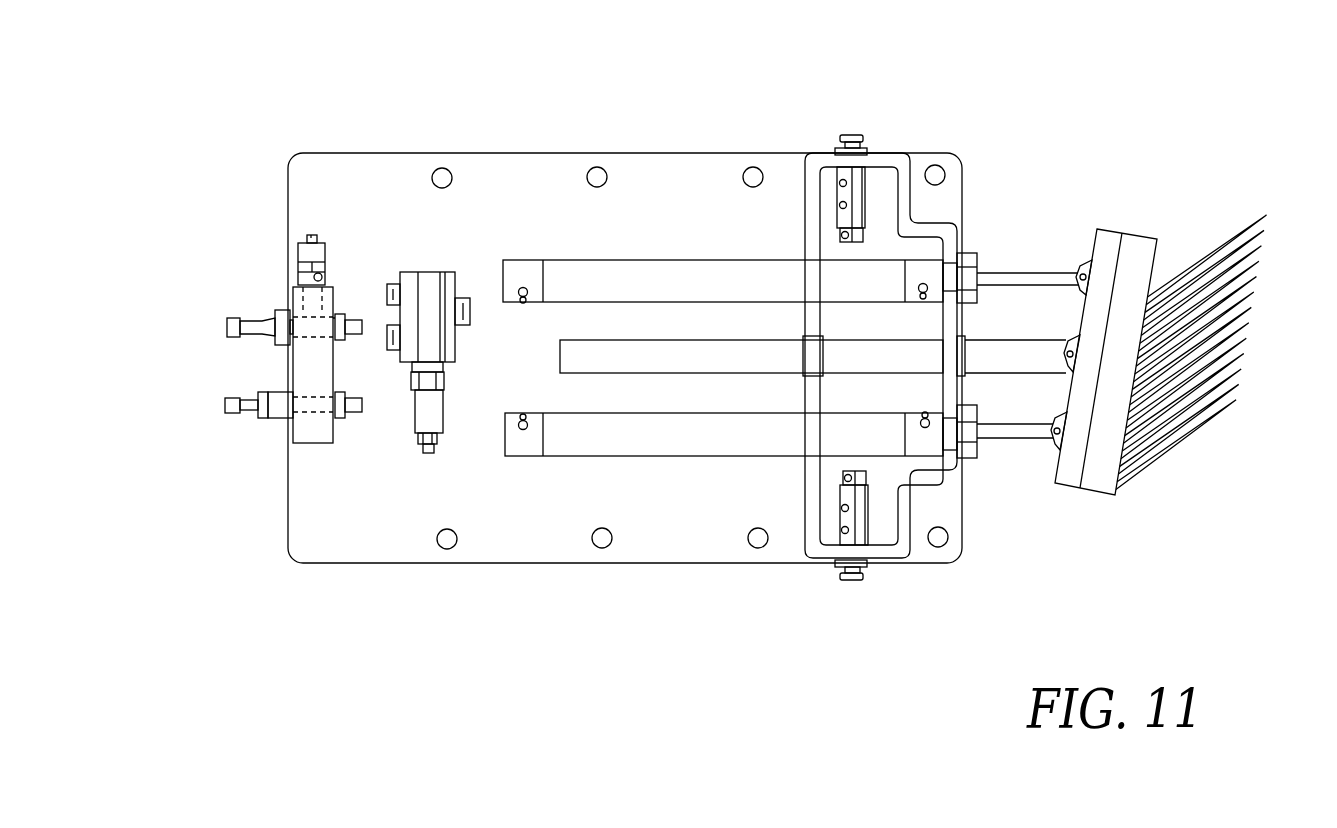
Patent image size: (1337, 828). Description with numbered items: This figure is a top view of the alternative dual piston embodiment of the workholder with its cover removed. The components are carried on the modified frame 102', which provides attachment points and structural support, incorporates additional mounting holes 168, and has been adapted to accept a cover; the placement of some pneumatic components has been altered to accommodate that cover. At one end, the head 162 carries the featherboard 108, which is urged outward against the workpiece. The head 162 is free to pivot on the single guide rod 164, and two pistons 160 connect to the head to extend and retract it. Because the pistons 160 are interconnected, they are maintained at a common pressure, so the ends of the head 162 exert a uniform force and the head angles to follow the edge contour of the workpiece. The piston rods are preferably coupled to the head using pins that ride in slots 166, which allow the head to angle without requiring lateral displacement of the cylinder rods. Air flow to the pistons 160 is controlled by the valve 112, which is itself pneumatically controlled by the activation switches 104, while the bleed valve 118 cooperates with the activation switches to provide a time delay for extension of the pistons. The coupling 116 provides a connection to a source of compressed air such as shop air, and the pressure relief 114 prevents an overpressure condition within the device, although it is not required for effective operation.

The modified frame 102' is at (611, 403).
The activation switches 104 is at (847, 135).
The featherboard 108 is at (1135, 490).
The valve 112 is at (405, 268).
The pressure relief 114 is at (297, 244).
The coupling 116 is at (267, 313).
The bleed valve 118 is at (270, 417).
The pistons 160 is at (565, 259).
The head 162 is at (1115, 224).
The guide rod 164 is at (737, 340).
The slots 166 is at (1078, 264).
The additional mounting holes 168 is at (933, 163).